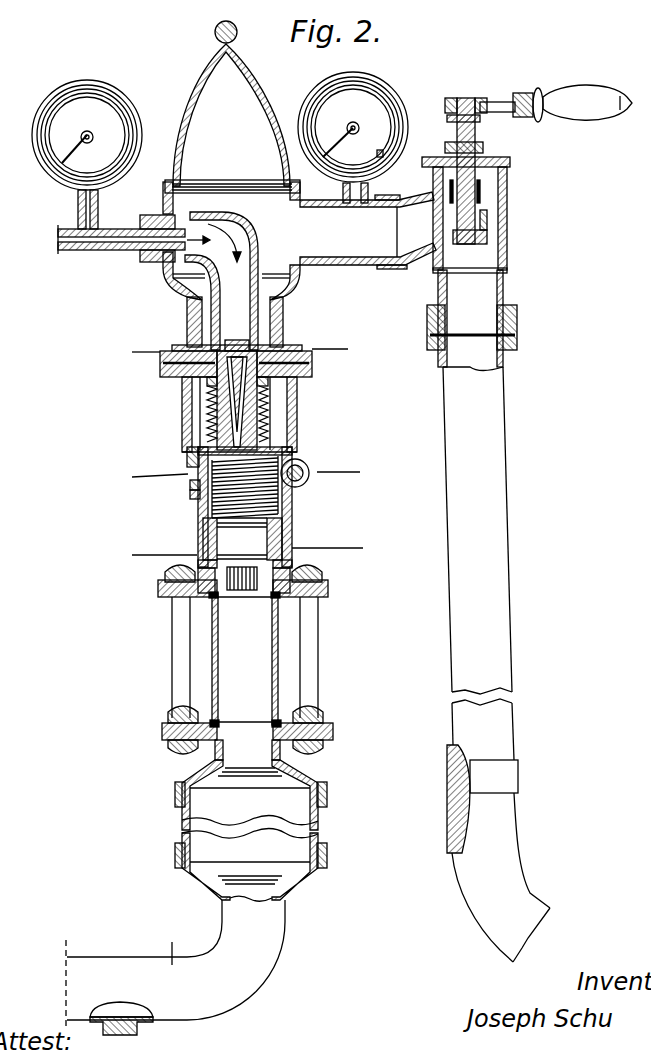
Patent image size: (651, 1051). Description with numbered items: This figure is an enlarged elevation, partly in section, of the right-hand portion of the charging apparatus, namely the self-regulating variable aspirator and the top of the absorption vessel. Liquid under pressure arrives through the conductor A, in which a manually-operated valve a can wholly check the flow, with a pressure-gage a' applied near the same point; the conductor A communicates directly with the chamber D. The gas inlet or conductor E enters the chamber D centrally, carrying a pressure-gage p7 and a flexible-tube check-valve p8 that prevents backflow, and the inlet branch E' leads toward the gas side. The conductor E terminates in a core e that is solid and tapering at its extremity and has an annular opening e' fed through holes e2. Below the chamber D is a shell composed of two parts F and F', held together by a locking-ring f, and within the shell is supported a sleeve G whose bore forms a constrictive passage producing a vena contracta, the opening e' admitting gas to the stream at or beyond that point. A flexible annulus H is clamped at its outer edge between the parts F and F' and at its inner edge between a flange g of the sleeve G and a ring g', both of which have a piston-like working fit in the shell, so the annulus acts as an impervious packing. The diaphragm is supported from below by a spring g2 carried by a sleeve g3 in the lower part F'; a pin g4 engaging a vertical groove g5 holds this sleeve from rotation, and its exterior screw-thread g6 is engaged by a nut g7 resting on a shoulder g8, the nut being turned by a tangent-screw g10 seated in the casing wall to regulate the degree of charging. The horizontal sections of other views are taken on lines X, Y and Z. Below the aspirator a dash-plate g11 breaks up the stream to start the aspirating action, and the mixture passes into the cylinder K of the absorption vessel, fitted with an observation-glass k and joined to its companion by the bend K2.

The pressure-gage p7 is at (117, 112).
The pressure-gage a' is at (361, 137).
The flexible-tube check-valve p8 is at (213, 228).
The chamber D is at (231, 160).
The gas inlet or conductor E is at (221, 281).
The inlet pipe E' is at (121, 248).
The manually-operated valve a is at (466, 189).
The conductor A is at (505, 582).
The shell part F is at (249, 322).
The flange of the sleeve g is at (252, 332).
The locking-ring f is at (312, 360).
The holes e2 is at (227, 348).
The section line x x X is at (231, 350).
The shell part F' is at (258, 414).
The ring g' is at (264, 412).
The annulus H is at (200, 380).
The annular opening e' is at (208, 394).
The core e is at (209, 414).
The sleeve G is at (270, 437).
The spring g2 is at (199, 457).
The tangent-screw g10 is at (307, 467).
The section line y y Y is at (240, 477).
The nut g7 is at (197, 483).
The shoulder g8 is at (197, 492).
The vertical groove g5 is at (290, 503).
The exterior screw-thread g6 is at (282, 520).
The sleeve g3 is at (228, 548).
The pin g4 is at (293, 547).
The section line z z Z is at (243, 554).
The dash-plate g11 is at (245, 578).
The observation-glass k is at (257, 673).
The cylinder K is at (305, 808).
The bend K2 is at (175, 967).